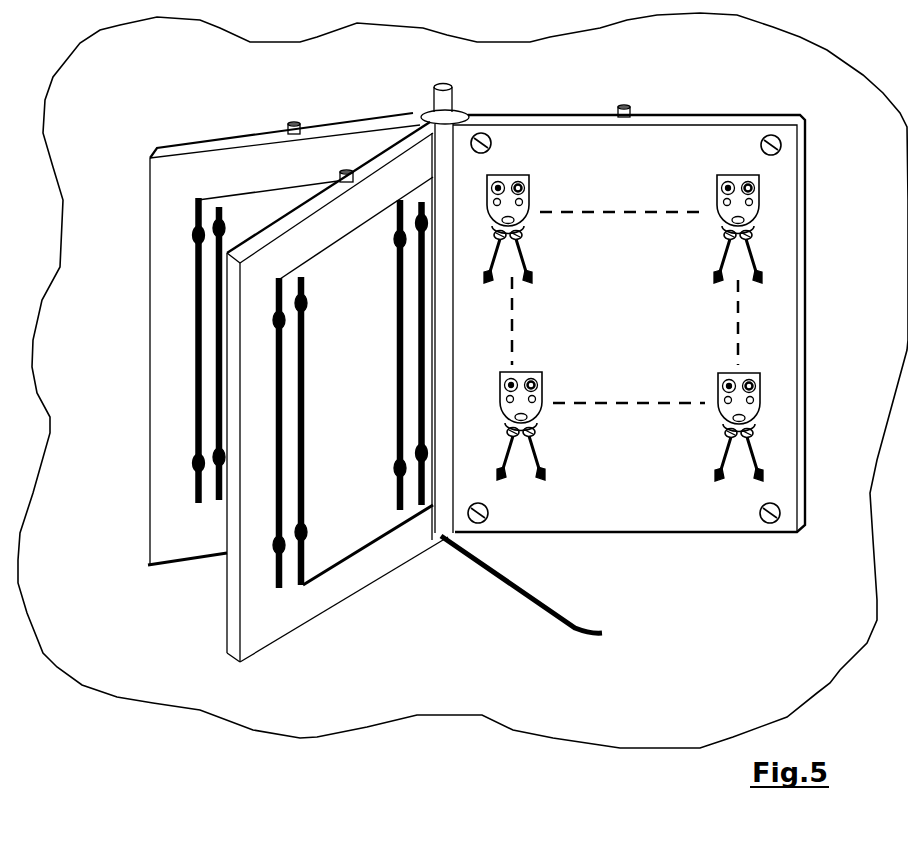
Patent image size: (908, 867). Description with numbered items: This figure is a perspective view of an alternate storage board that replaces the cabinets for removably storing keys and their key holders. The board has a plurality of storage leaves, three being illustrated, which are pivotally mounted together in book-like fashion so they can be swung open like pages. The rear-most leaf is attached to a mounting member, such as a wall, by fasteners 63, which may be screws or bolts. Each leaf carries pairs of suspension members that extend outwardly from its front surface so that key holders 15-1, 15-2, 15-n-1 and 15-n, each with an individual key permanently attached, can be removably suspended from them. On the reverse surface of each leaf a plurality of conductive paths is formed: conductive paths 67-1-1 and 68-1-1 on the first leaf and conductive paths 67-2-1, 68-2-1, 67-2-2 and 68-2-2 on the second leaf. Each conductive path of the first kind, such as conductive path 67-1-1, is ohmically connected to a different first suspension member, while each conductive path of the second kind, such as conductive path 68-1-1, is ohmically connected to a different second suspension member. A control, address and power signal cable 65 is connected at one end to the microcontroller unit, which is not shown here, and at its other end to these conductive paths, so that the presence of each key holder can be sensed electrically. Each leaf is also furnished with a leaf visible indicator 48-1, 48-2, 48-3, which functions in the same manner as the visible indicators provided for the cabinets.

The leaf visible indicator 48-1 is at (289, 122).
The leaf visible indicator 48-2 is at (348, 170).
The leaf visible indicator 48-3 is at (629, 103).
The fasteners 63 is at (484, 134).
The key holder 15-1 is at (524, 175).
The key holder 15-2 is at (753, 175).
The key holder 15-n-1 is at (535, 372).
The key holder 15-n is at (751, 374).
The conductive path 67-1-1 is at (197, 315).
The conductive path 68-1-1 is at (218, 382).
The conductive path 67-2-1 is at (277, 530).
The conductive path 68-2-1 is at (296, 582).
The conductive path 67-2-2 is at (397, 393).
The conductive path 68-2-2 is at (420, 496).
The control, address and power signal cable 65 is at (497, 587).